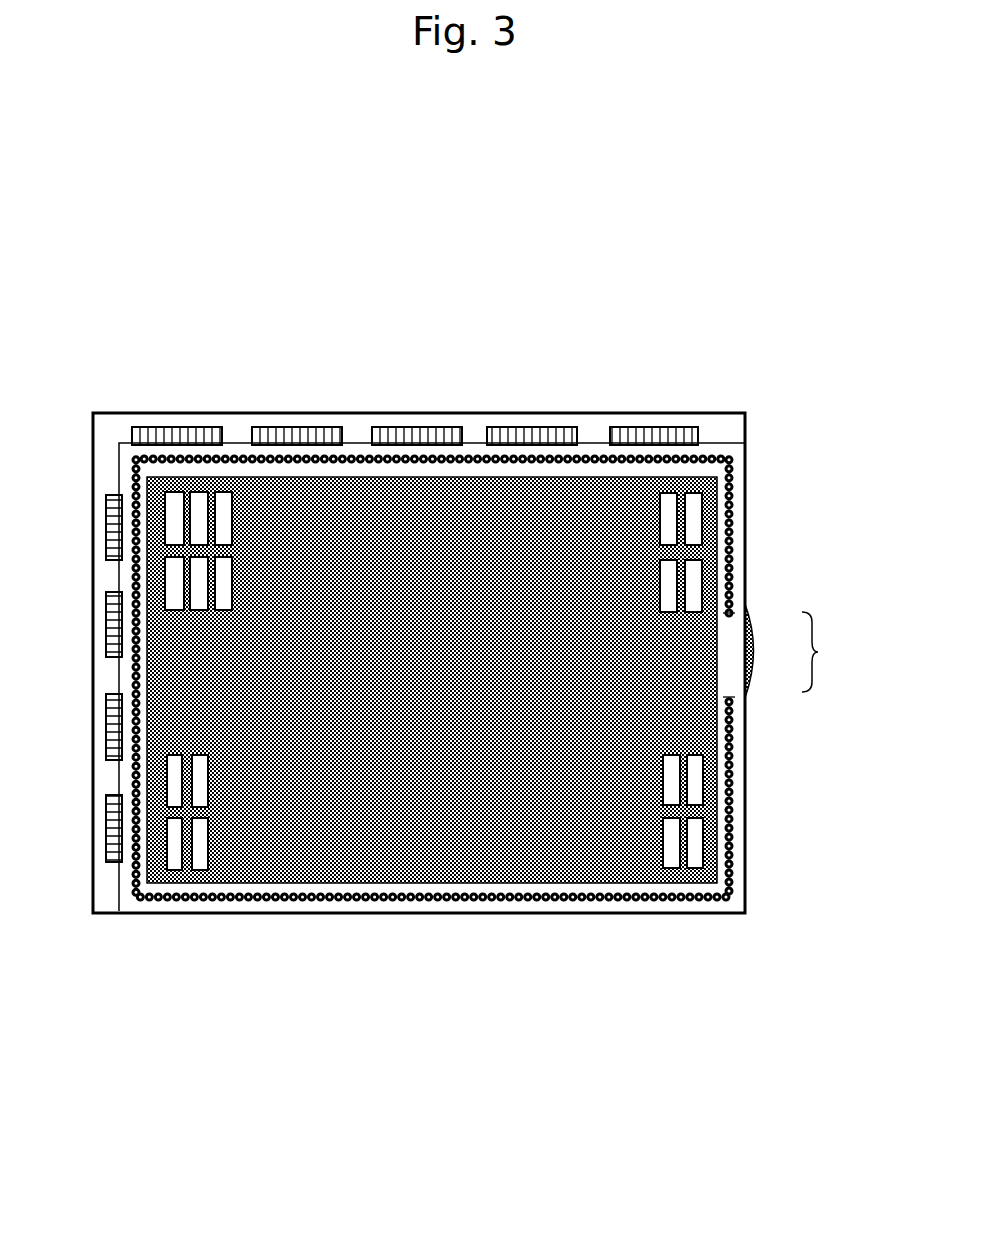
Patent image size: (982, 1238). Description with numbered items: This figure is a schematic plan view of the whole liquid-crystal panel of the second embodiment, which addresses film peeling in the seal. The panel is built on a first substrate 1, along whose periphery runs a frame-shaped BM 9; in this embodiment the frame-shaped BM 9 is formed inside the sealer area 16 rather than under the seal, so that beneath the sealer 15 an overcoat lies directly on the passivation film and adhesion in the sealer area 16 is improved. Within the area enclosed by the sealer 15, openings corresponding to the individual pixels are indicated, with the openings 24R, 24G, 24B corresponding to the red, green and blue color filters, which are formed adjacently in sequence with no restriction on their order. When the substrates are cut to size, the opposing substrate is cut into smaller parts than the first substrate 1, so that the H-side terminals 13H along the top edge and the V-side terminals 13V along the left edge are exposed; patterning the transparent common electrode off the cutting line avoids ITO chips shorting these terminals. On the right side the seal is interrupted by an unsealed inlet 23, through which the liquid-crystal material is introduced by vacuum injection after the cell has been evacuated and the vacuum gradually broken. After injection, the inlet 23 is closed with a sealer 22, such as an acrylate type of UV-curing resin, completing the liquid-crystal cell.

The first substrate 1 is at (452, 413).
The frame-shaped BM 9 is at (272, 882).
The H-side terminal 13H is at (543, 429).
The V-side terminal 13V is at (112, 855).
The sealer 15 is at (737, 475).
The sealer area 16 is at (119, 443).
The sealer 22 is at (748, 697).
The inlet 23 is at (831, 652).
The opening 24R is at (173, 512).
The opening 24G is at (198, 512).
The opening 24B is at (222, 512).